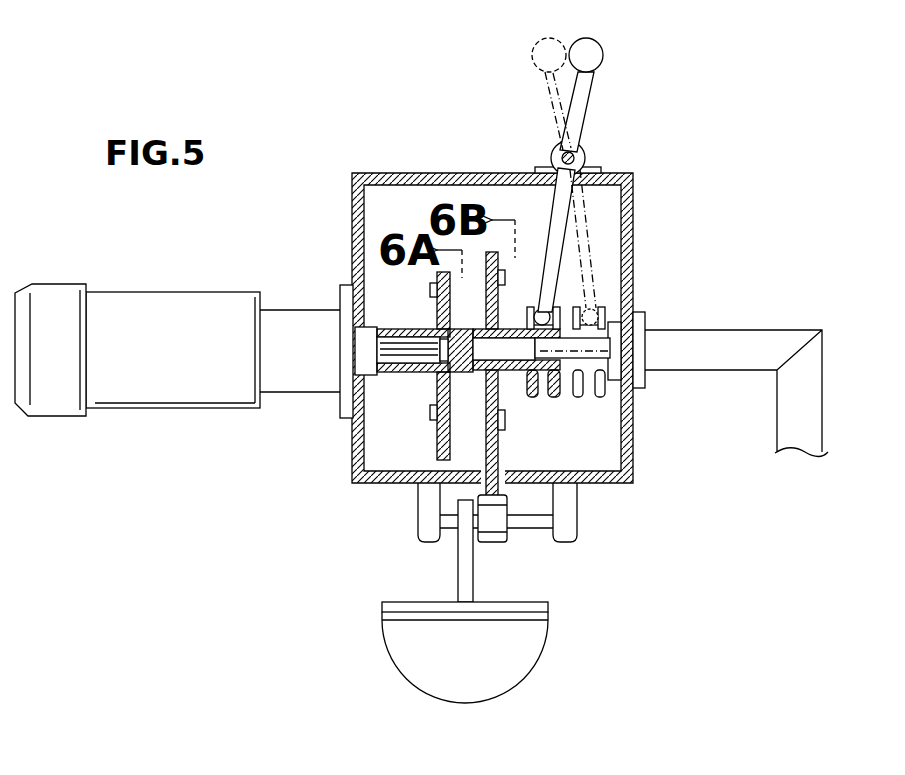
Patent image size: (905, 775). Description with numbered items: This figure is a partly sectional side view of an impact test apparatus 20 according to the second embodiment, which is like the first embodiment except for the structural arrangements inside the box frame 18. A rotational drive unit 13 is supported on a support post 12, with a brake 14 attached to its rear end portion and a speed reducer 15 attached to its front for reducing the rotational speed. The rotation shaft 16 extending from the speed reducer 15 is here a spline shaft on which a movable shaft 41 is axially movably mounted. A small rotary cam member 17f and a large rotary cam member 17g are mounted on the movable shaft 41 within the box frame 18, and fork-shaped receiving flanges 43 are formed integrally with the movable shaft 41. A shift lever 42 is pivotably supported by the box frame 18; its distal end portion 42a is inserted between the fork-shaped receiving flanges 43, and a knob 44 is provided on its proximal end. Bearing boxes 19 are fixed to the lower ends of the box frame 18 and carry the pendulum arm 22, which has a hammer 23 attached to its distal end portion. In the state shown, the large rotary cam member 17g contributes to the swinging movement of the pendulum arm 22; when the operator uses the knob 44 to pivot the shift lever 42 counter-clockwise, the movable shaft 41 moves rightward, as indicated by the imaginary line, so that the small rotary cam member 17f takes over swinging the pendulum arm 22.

The support post 12 is at (813, 397).
The rotational drive unit 13 is at (175, 393).
The brake 14 is at (65, 297).
The speed reducer 15 is at (313, 310).
The rotation shaft 16 is at (392, 328).
The small rotary cam member 17f is at (440, 434).
The large rotary cam member 17g is at (498, 450).
The box frame 18 is at (366, 174).
The bearing box 19 is at (586, 582).
The impact test apparatus 20 is at (705, 196).
The pendulum arm 22 is at (458, 575).
The hammer 23 is at (513, 660).
The movable shaft 41 is at (412, 327).
The shift lever 42 is at (590, 123).
The distal end portion 42a is at (597, 307).
The fork-shaped receiving flange 43 is at (558, 397).
The knob 44 is at (600, 52).